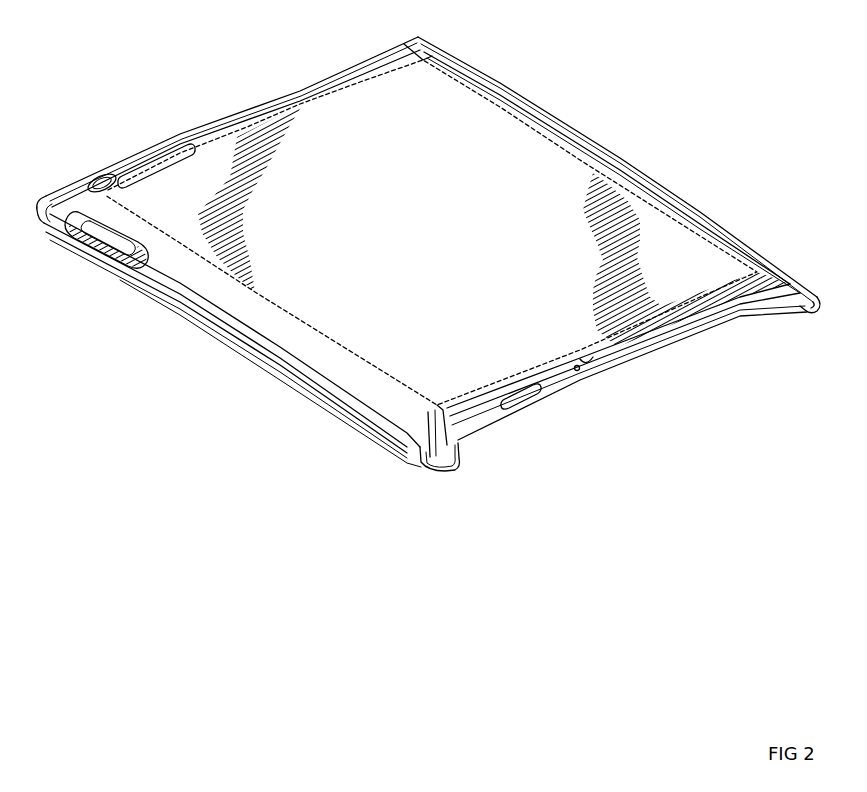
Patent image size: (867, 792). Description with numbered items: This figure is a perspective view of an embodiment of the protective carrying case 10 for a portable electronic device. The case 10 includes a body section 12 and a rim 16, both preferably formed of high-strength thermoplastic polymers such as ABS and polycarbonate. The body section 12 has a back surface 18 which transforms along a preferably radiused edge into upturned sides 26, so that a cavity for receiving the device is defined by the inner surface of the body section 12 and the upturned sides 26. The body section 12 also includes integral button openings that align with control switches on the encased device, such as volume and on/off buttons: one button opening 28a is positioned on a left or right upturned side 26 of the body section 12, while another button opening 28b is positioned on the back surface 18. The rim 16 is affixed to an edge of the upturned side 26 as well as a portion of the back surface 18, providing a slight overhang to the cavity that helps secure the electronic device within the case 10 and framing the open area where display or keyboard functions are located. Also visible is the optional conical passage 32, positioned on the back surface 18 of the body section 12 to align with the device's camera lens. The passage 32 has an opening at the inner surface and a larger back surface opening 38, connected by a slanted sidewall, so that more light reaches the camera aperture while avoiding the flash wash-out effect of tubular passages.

The protective carrying case 10 is at (641, 68).
The body section 12 is at (638, 232).
The rim 16 is at (626, 358).
The back surface 18 is at (431, 232).
The upturned side 26 is at (197, 302).
The button opening 28a is at (100, 246).
The button opening 28b is at (519, 405).
The conical passage 32 is at (100, 178).
The back surface opening 38 is at (116, 184).